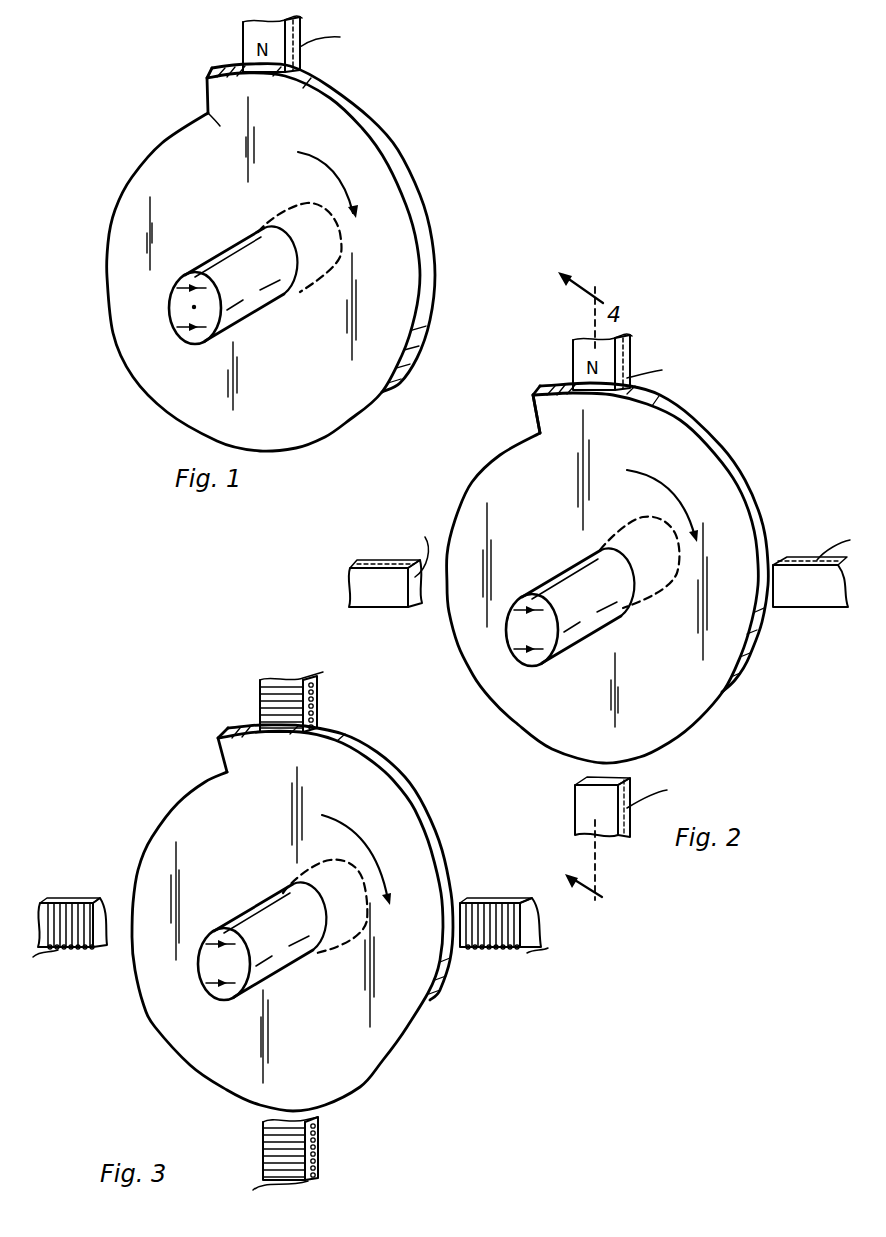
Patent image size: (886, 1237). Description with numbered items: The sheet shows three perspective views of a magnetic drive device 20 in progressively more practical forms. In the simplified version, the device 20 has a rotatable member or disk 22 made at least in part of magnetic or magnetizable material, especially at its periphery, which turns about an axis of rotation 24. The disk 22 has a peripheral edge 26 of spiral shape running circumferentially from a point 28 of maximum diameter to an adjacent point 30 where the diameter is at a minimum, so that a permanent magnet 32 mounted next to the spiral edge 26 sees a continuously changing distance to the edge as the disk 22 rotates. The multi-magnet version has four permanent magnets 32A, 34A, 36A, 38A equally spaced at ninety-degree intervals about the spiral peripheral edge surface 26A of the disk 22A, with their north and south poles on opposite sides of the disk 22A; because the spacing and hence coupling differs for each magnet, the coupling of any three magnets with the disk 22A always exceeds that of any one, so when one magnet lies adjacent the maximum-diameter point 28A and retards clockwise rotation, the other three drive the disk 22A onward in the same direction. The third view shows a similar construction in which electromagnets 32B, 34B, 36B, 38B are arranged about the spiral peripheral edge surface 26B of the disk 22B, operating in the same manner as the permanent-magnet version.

In FIG. 1, the magnetic drive device 20 is at (400, 118).
In FIG. 1, the disk 22 is at (333, 407).
In FIG. 1, the axis of rotation 24 is at (193, 308).
In FIG. 1, the peripheral edge 26 is at (185, 428).
In FIG. 1, the point of maximum diameter 28 is at (215, 72).
In FIG. 1, the point of minimum diameter 30 is at (208, 113).
In FIG. 1, the permanent magnet 32 is at (243, 40).
In FIG. 2, the disk 22A is at (735, 550).
In FIG. 2, the peripheral edge surface 26A is at (738, 490).
In FIG. 2, the point of maximum diameter 28A is at (542, 393).
In FIG. 2, the permanent magnet 32A is at (630, 355).
In FIG. 2, the permanent magnet 34A is at (815, 609).
In FIG. 2, the permanent magnet 36A is at (572, 807).
In FIG. 2, the permanent magnet 38A is at (373, 557).
In FIG. 3, the disk 22B is at (333, 1070).
In FIG. 3, the peripheral edge surface 26B is at (393, 788).
In FIG. 3, the electromagnet 32B is at (322, 710).
In FIG. 3, the electromagnet 34B is at (497, 956).
In FIG. 3, the electromagnet 36B is at (323, 1160).
In FIG. 3, the electromagnet 38B is at (73, 954).